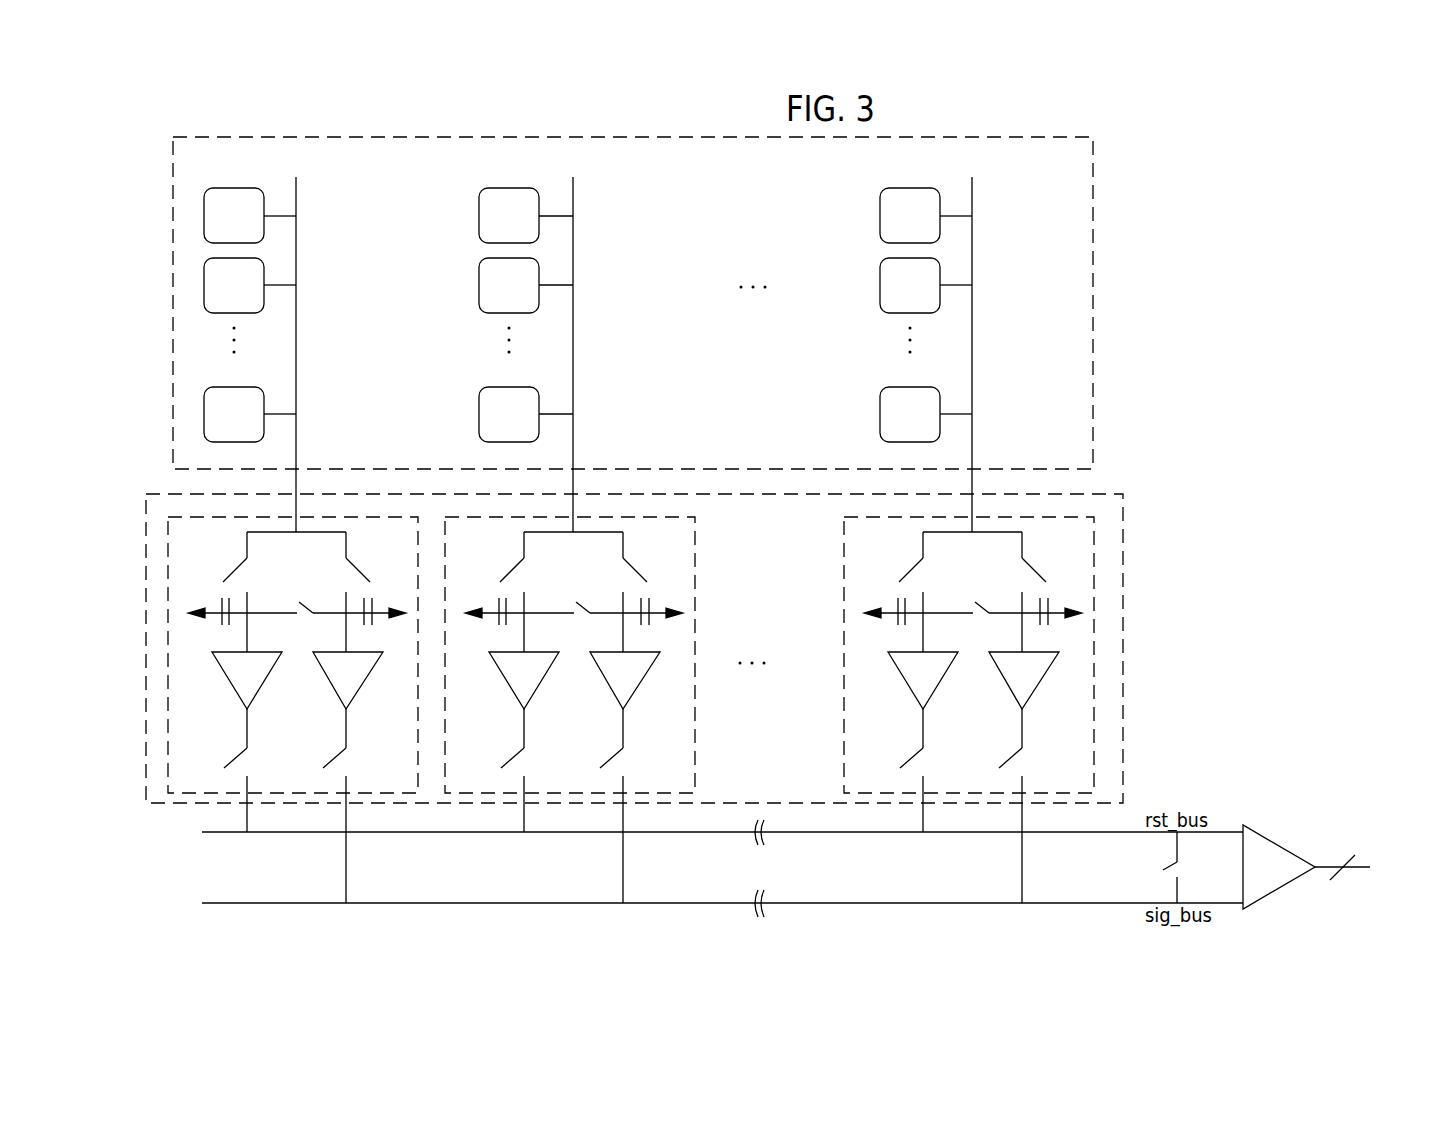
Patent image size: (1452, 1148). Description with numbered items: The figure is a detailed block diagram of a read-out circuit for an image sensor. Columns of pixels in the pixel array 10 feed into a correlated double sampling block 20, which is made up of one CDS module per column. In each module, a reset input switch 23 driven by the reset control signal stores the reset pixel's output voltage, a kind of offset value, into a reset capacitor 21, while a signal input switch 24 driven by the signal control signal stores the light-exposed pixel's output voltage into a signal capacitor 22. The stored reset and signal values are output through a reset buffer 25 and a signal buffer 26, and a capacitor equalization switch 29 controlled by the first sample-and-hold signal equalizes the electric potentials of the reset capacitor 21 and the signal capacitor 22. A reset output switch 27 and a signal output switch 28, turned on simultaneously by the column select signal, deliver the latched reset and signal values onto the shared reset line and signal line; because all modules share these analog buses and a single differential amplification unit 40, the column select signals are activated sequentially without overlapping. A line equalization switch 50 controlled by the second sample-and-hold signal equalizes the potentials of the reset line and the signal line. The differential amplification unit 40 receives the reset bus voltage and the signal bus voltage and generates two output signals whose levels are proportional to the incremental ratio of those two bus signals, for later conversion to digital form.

The pixel array 10 is at (1027, 137).
The correlated double sampling (CDS) block 20 is at (660, 698).
The reset capacitor 21 is at (220, 602).
The signal capacitor 22 is at (373, 603).
The reset input switch 23 is at (247, 558).
The signal input switch 24 is at (348, 560).
The reset buffer 25 is at (256, 680).
The signal buffer 26 is at (358, 680).
The reset output switch 27 is at (248, 762).
The signal output switch 28 is at (340, 753).
The capacitor equalization switch 29 is at (303, 616).
The differential amplification unit 40 is at (1280, 844).
The line equalization switch 50 is at (1165, 868).